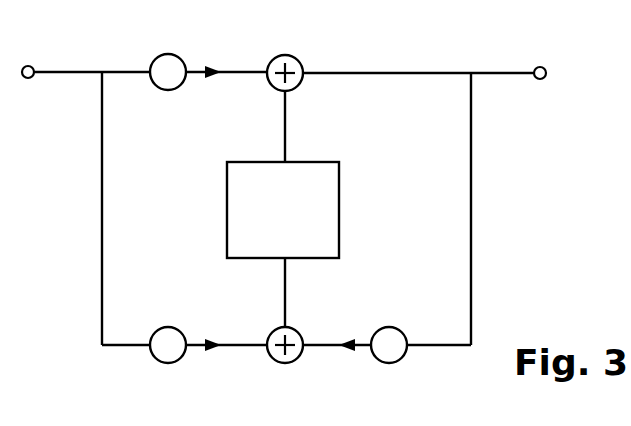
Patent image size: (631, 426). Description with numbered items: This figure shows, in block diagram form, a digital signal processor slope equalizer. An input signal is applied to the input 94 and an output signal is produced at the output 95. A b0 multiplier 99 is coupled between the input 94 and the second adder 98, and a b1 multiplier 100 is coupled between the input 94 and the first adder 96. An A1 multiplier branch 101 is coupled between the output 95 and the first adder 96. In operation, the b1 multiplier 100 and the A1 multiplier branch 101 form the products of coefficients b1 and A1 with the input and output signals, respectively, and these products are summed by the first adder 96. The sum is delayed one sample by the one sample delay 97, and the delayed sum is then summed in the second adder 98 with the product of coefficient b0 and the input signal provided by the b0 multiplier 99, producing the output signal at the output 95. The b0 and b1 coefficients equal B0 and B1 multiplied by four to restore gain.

The input 94 is at (30, 66).
The output 95 is at (545, 78).
The first adder 96 is at (288, 363).
The one sample delay 97 is at (339, 227).
The second adder 98 is at (283, 55).
The b0 multiplier 99 is at (170, 90).
The b1 multiplier 100 is at (168, 363).
The A1 multiplier branch 101 is at (386, 363).